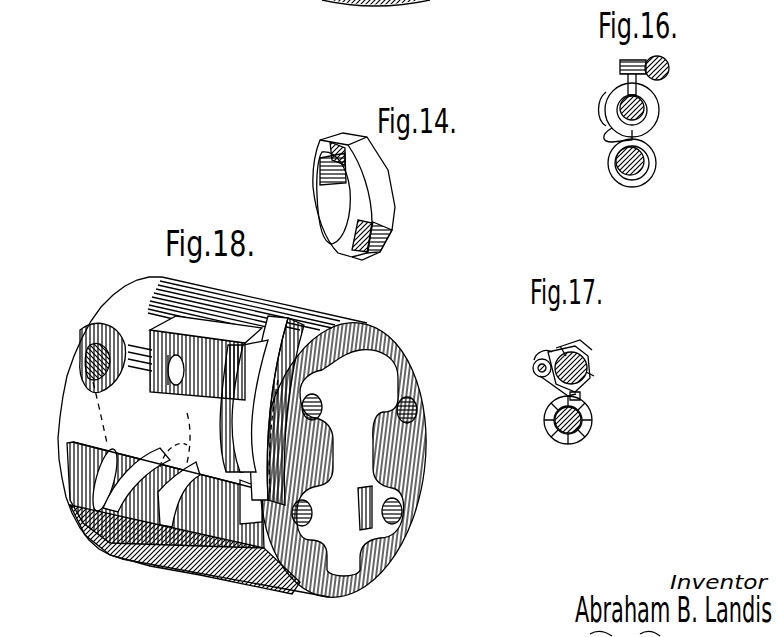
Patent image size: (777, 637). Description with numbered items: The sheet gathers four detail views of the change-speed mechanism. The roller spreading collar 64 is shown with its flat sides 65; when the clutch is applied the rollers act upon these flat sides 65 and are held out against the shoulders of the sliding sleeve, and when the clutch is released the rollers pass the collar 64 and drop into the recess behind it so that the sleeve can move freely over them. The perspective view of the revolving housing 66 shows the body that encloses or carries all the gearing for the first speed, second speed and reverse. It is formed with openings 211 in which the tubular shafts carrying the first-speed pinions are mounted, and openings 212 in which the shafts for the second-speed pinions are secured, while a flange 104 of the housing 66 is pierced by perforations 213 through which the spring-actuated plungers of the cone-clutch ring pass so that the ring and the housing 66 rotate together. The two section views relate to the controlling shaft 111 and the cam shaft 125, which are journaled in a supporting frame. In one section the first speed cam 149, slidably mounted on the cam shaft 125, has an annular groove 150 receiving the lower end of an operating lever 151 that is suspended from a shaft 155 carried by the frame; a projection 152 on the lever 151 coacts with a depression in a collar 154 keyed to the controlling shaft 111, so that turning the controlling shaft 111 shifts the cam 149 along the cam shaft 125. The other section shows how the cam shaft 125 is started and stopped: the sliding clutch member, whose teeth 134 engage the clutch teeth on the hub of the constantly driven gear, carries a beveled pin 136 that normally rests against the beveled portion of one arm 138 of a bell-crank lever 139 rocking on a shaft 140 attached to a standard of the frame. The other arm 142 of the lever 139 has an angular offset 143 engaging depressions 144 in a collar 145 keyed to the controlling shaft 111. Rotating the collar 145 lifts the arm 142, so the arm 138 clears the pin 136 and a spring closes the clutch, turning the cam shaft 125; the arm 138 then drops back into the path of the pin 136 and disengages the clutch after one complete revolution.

In FIG. 14, the collar 64 is at (382, 192).
In FIG. 14, the flat sides 65 is at (322, 140).
In FIG. 18, the revolving housing 66 is at (246, 320).
In FIG. 18, the flange 104 is at (104, 334).
In FIG. 18, the perforations 213 is at (98, 357).
In FIG. 18, the openings 211 is at (312, 502).
In FIG. 18, the openings 212 is at (305, 392).
In FIG. 16, the controlling shaft 111 is at (614, 110).
In FIG. 17, the controlling shaft 111 is at (588, 366).
In FIG. 16, the cam shaft 125 is at (618, 170).
In FIG. 17, the cam shaft 125 is at (590, 418).
In FIG. 16, the first speed cam 149 is at (652, 150).
In FIG. 16, the annular groove 150 is at (652, 162).
In FIG. 16, the operating lever 151 is at (612, 128).
In FIG. 16, the projection 152 is at (640, 84).
In FIG. 16, the collar 154 is at (648, 106).
In FIG. 16, the shaft 155 is at (668, 66).
In FIG. 17, the teeth 134 is at (546, 430).
In FIG. 17, the beveled pin 136 is at (582, 394).
In FIG. 17, the arm 138 is at (548, 380).
In FIG. 17, the bell-crank lever 139 is at (548, 356).
In FIG. 17, the shaft 140 is at (532, 368).
In FIG. 17, the arm 142 is at (562, 354).
In FIG. 17, the angular offset 143 is at (578, 348).
In FIG. 17, the depressions 144 is at (584, 358).
In FIG. 17, the collar 145 is at (592, 376).